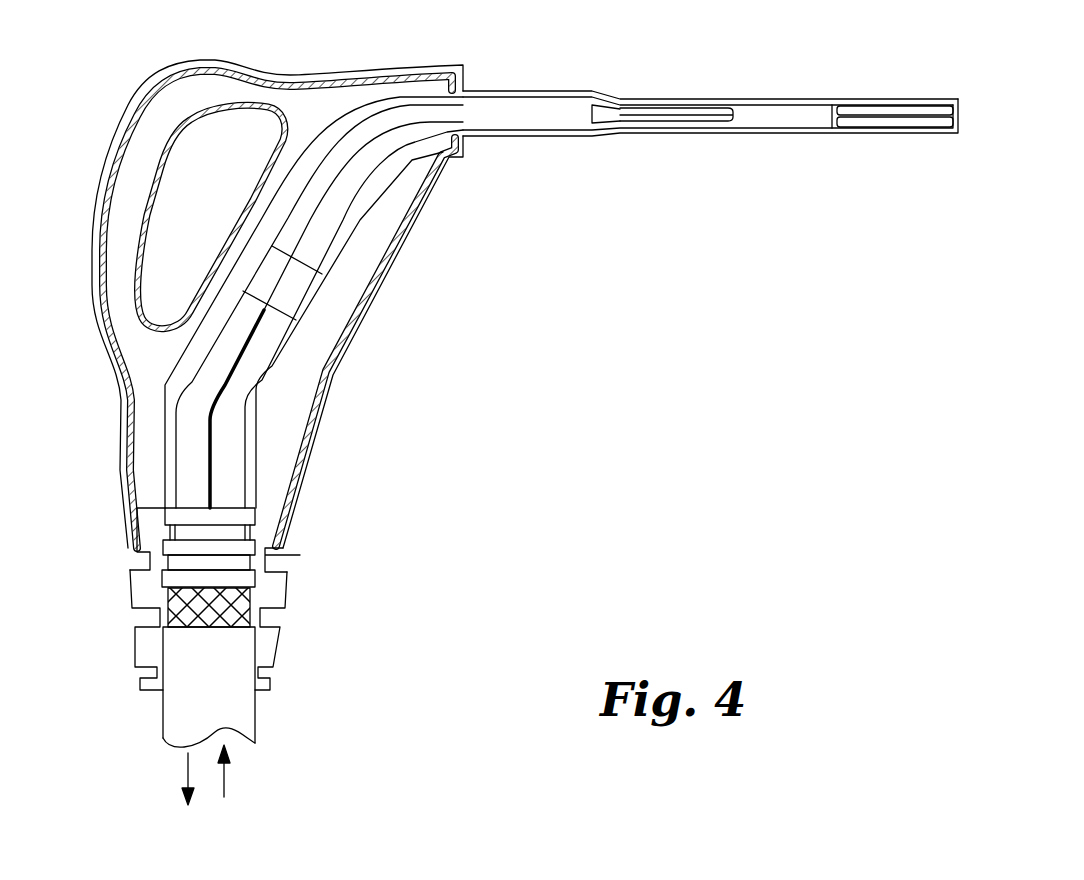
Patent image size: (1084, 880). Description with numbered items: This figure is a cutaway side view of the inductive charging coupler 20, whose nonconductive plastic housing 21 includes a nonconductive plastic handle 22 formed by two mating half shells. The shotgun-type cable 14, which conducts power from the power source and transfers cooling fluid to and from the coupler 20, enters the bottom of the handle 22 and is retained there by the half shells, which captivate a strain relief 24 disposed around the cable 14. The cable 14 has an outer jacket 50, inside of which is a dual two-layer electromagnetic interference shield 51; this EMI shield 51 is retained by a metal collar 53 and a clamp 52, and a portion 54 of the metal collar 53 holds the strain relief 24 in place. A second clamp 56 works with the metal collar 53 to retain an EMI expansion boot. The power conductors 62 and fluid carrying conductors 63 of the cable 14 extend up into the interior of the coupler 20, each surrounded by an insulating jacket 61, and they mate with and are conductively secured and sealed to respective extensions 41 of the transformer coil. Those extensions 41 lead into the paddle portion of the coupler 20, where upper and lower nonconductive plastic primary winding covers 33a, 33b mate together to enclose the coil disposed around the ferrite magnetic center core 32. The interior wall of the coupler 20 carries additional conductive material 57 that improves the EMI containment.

The shotgun-type cable 14 is at (255, 718).
The inductive charging coupler 20 is at (810, 478).
The housing 21 is at (452, 464).
The handle 22 is at (133, 108).
The strain relief 24 is at (280, 644).
The ferrite magnetic center core 32 is at (808, 106).
The upper primary winding cover 33a is at (548, 92).
The lower primary winding cover 33b is at (546, 137).
The extensions of the transformer coil 41 is at (346, 128).
The outer jacket 50 is at (175, 712).
The electromagnetic interference shield 51 is at (238, 600).
The clamp 52 is at (258, 580).
The metal collar 53 is at (158, 568).
The portion of the metal collar 54 is at (258, 548).
The second clamp 56 is at (258, 518).
The conductive material 57 is at (231, 74).
The insulating jacket 61 is at (190, 432).
The power conductors 62 is at (293, 298).
The fluid carrying conductors 63 is at (336, 315).